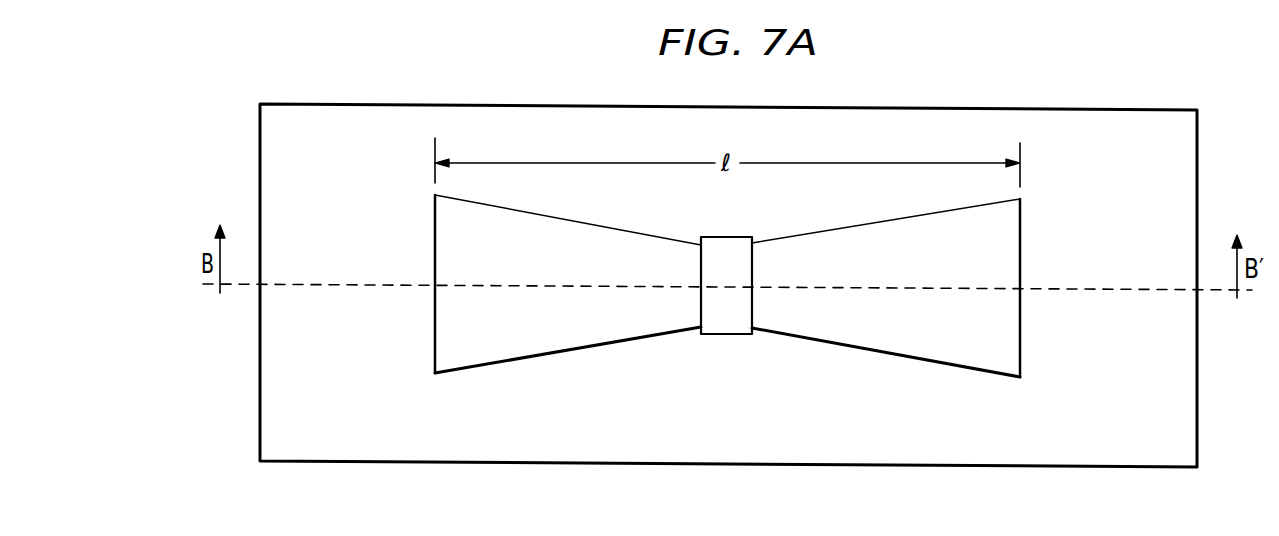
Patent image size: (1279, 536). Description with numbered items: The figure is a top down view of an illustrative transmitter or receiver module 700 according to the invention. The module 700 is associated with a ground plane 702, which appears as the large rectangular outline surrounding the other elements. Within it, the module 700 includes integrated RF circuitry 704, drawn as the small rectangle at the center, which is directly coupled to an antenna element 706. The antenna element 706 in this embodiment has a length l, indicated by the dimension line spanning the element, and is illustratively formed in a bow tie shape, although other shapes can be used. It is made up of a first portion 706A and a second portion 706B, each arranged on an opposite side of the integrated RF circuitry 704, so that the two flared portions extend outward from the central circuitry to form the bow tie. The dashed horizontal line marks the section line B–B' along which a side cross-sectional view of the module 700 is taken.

The transmitter or receiver module 700 is at (1174, 87).
The ground plane 702 is at (972, 108).
The integrated RF circuitry 704 is at (730, 335).
The antenna element 706 is at (706, 354).
The first portion 706A is at (498, 335).
The second portion 706B is at (988, 338).